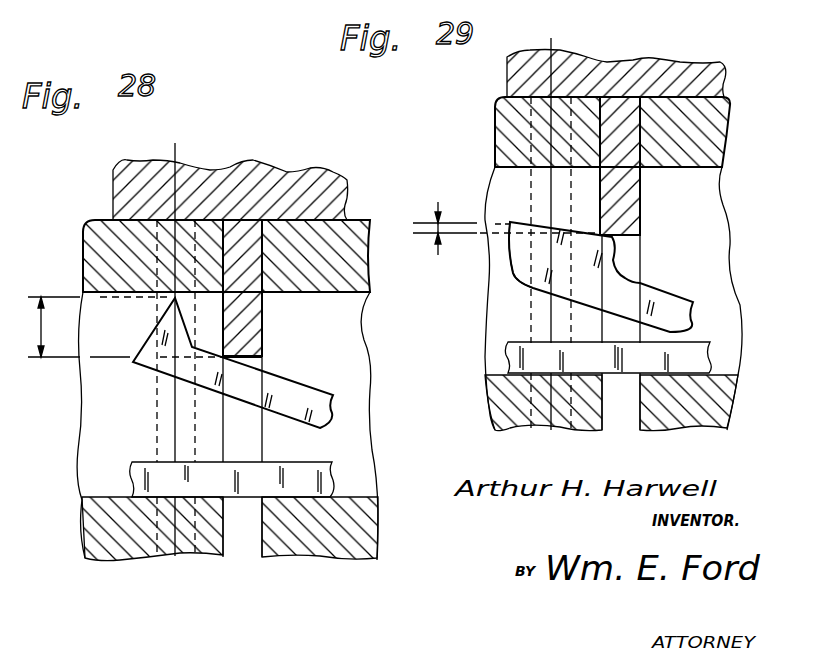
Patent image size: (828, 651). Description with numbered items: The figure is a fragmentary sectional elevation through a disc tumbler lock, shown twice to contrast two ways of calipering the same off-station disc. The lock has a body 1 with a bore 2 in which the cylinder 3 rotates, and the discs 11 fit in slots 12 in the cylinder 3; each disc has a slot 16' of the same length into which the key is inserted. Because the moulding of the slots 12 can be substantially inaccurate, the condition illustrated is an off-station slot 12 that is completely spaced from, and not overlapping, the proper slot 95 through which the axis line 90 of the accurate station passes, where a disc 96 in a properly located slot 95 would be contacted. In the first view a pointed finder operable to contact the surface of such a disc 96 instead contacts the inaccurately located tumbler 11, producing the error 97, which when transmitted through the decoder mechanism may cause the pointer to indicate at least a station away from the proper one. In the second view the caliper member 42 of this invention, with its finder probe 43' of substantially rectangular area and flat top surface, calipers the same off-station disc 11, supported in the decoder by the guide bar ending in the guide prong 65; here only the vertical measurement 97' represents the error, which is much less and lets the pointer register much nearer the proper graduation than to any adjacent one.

In FIG. 28, the body 1 is at (350, 178).
In FIG. 29, the body 1 is at (722, 73).
In FIG. 28, the bore 2 is at (348, 320).
In FIG. 29, the bore 2 is at (702, 183).
In FIG. 28, the cylinder 3 is at (350, 273).
In FIG. 29, the cylinder 3 is at (703, 139).
In FIG. 28, the disc 11 is at (247, 219).
In FIG. 29, the disc 11 is at (625, 103).
In FIG. 28, the slot 12 is at (342, 249).
In FIG. 29, the slot 12 is at (653, 122).
In FIG. 28, the slot 16' is at (277, 361).
In FIG. 29, the slot 16' is at (653, 243).
In FIG. 28, the caliper member 42 is at (318, 405).
In FIG. 29, the caliper member 42 is at (673, 298).
In FIG. 29, the finder probe 43' is at (483, 255).
In FIG. 28, the guide prong 65 is at (332, 473).
In FIG. 29, the guide prong 65 is at (700, 352).
In FIG. 28, the axis line 90 is at (173, 147).
In FIG. 29, the axis line 90 is at (553, 40).
In FIG. 28, the proper slot 95 is at (155, 243).
In FIG. 29, the proper slot 95 is at (530, 128).
In FIG. 28, the disc 96 is at (162, 272).
In FIG. 29, the disc 96 is at (538, 148).
In FIG. 28, the error 97 is at (66, 327).
In FIG. 29, the vertical measurement 97' is at (461, 218).